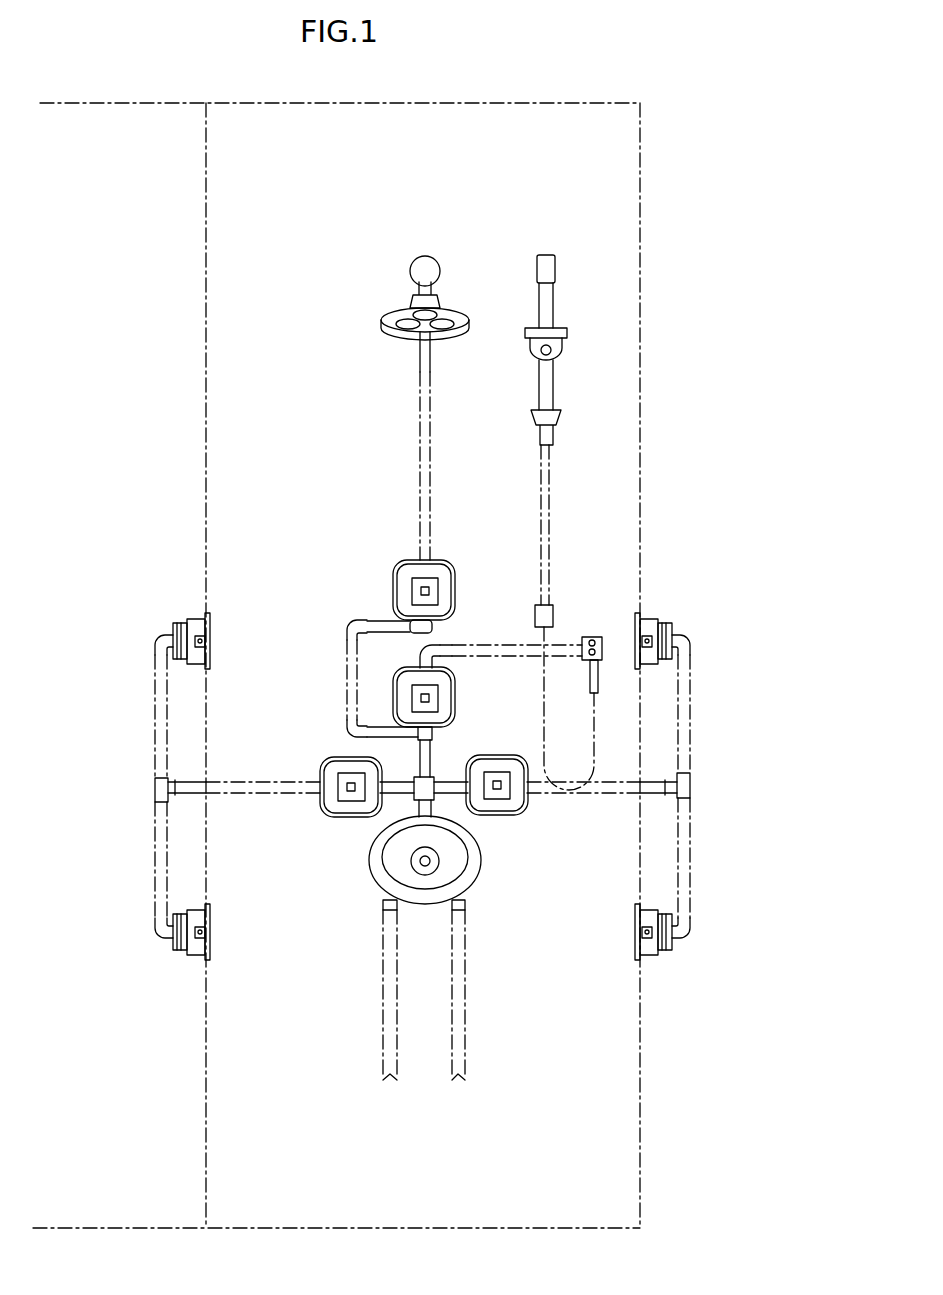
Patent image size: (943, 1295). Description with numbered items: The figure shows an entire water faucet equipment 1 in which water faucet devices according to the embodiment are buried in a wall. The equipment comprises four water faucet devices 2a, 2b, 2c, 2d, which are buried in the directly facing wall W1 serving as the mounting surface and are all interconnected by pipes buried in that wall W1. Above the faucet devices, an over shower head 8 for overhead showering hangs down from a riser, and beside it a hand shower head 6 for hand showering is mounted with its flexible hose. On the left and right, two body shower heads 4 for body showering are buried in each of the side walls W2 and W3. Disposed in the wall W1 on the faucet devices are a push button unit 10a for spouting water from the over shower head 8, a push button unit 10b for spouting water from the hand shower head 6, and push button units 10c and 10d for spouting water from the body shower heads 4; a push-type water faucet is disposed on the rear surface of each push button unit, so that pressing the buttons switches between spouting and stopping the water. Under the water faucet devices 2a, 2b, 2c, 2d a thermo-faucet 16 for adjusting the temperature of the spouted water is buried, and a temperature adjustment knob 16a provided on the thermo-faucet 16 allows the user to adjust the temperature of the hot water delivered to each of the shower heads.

The water faucet equipment 1 is at (572, 225).
The directly facing wall W1 is at (493, 153).
The wall W2 is at (640, 325).
The wall W3 is at (207, 360).
The over shower head 8 is at (447, 315).
The hand shower head 6 is at (560, 383).
The water faucet device 2a is at (419, 572).
The water faucet device 2b is at (393, 687).
The water faucet device 2c is at (323, 794).
The water faucet device 2d is at (512, 794).
The push button unit 10a is at (410, 575).
The push button unit 10b is at (412, 688).
The push button unit 10c is at (340, 770).
The push button unit 10d is at (490, 768).
The body shower head 4 is at (210, 624).
The thermo-faucet 16 is at (425, 948).
The temperature adjustment knob 16a is at (418, 868).